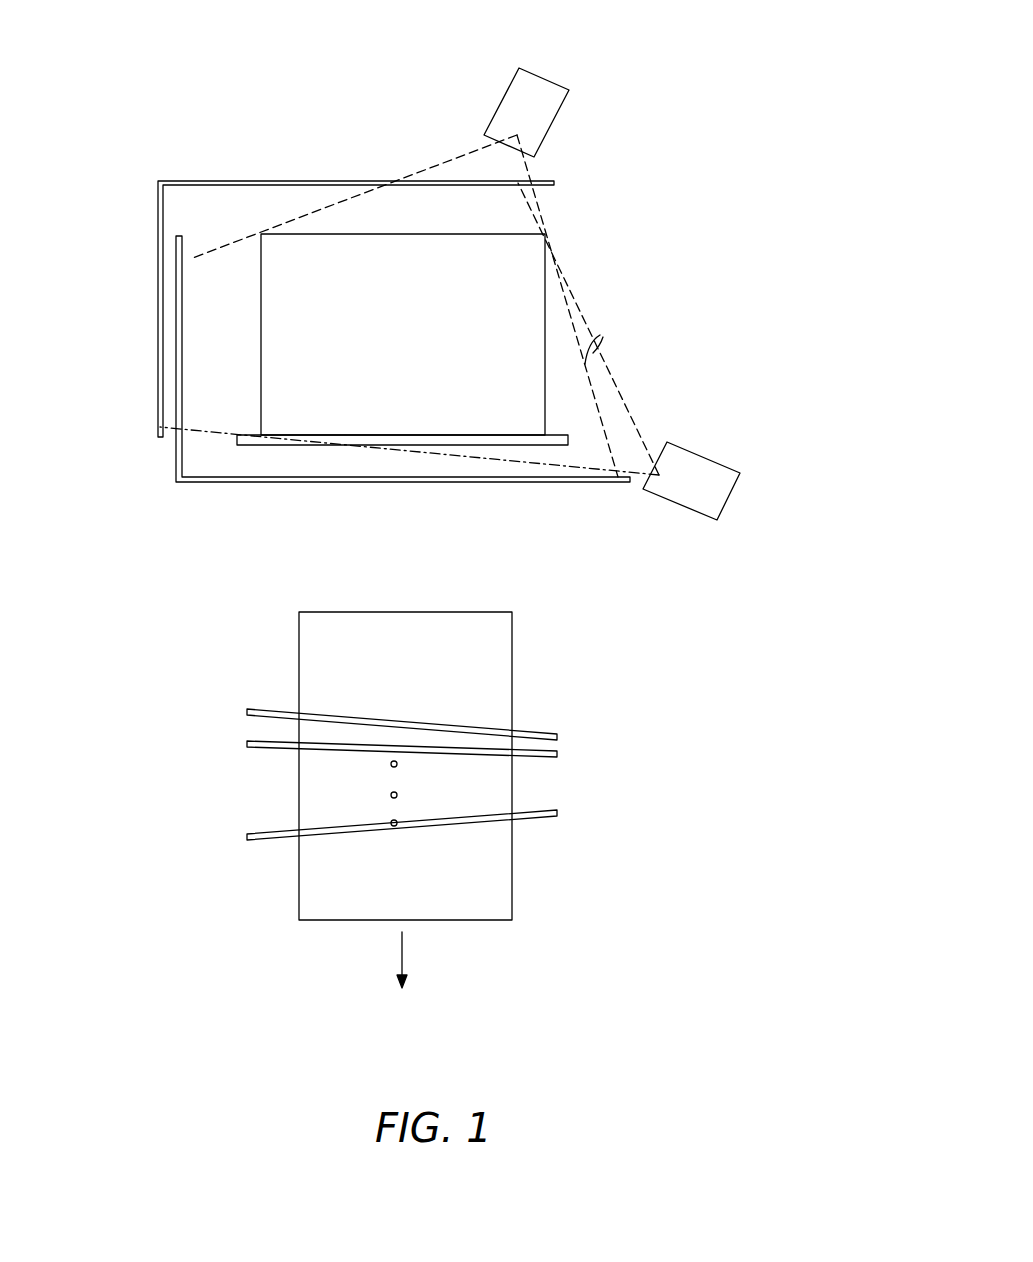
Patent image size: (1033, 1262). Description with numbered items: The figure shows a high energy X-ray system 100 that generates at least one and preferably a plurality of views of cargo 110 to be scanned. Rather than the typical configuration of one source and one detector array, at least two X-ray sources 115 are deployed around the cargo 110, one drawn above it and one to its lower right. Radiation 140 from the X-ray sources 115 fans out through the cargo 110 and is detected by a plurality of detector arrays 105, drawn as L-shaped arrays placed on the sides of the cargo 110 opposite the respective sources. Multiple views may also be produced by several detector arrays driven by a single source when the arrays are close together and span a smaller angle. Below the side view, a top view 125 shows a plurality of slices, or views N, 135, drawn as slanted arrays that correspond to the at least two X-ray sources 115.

The X-ray system 100 is at (80, 58).
The detector arrays 105 is at (110, 580).
The cargo 110 is at (539, 257).
The X-ray sources 115 is at (795, 440).
The top view 125 is at (310, 653).
The slices or views N 135 is at (263, 717).
The radiation 140 is at (598, 340).